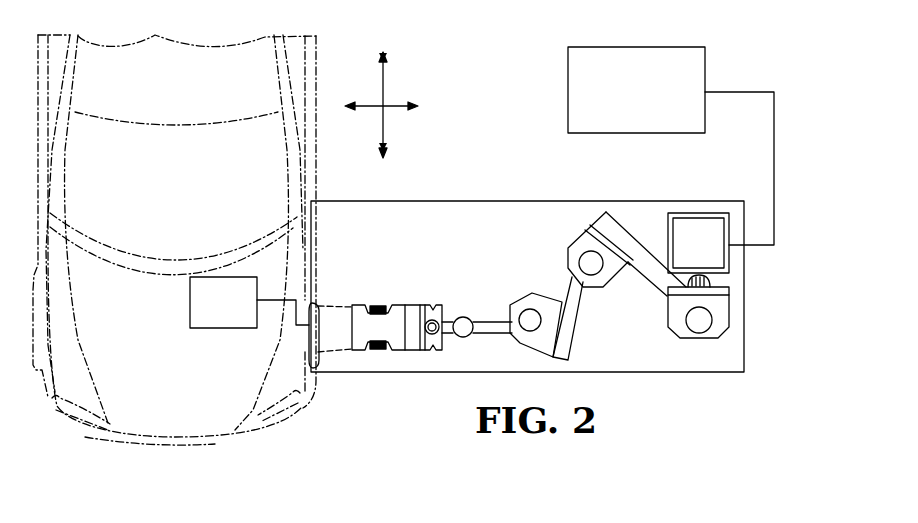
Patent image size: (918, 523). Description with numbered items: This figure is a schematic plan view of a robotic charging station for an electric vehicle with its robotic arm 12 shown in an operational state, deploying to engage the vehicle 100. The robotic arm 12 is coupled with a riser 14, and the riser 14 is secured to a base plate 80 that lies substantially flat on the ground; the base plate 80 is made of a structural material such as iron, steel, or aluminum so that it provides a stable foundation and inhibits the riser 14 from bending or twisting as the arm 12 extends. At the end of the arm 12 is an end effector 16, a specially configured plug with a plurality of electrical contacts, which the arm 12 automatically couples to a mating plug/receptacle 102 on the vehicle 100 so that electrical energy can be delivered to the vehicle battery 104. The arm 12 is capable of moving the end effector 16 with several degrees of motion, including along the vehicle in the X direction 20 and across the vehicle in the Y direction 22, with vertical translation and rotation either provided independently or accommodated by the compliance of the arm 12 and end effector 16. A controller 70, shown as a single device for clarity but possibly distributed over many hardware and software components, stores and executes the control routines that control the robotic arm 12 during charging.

The robotic arm 12 is at (597, 197).
The riser 14 is at (707, 212).
The end effector 16 is at (398, 305).
The X direction 20 is at (384, 77).
The Y direction 22 is at (398, 103).
The controller 70 is at (671, 146).
The base plate 80 is at (745, 330).
The vehicle 100 is at (83, 430).
The mating plug/receptacle 102 is at (313, 368).
The battery 104 is at (249, 302).